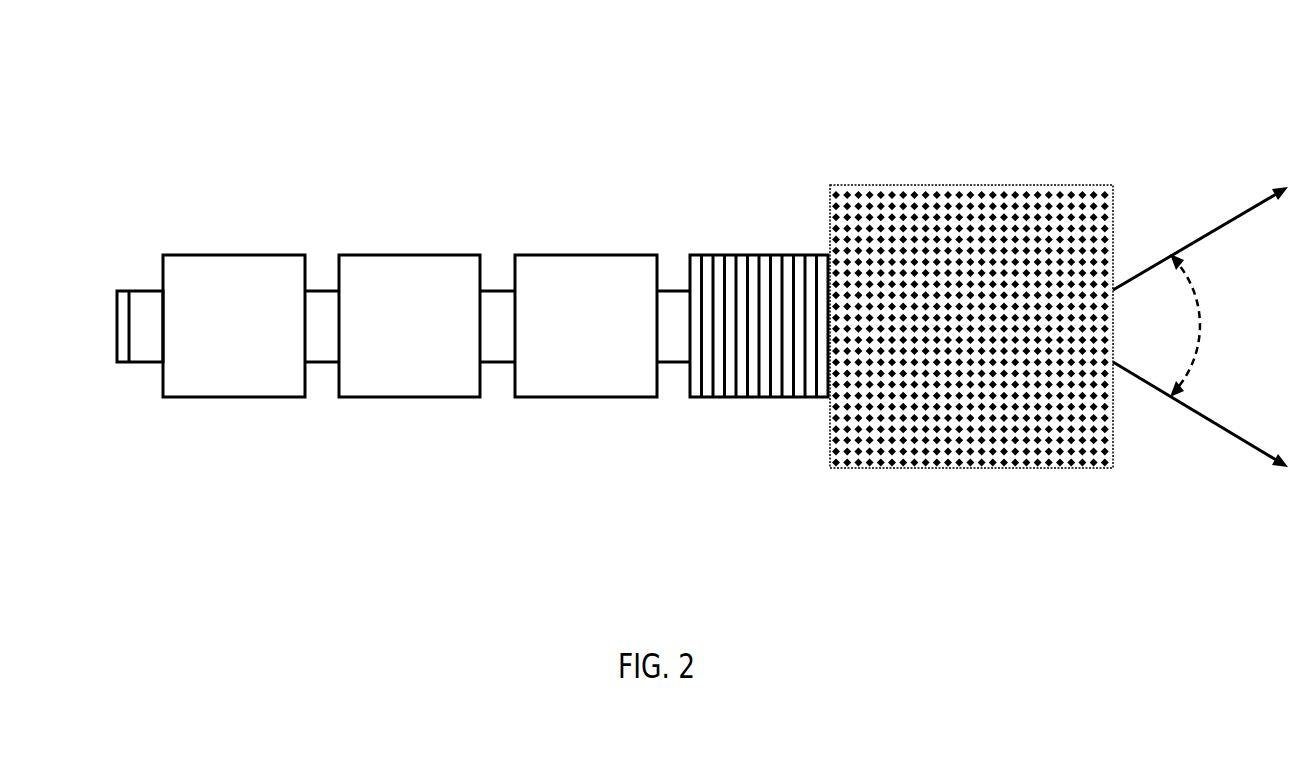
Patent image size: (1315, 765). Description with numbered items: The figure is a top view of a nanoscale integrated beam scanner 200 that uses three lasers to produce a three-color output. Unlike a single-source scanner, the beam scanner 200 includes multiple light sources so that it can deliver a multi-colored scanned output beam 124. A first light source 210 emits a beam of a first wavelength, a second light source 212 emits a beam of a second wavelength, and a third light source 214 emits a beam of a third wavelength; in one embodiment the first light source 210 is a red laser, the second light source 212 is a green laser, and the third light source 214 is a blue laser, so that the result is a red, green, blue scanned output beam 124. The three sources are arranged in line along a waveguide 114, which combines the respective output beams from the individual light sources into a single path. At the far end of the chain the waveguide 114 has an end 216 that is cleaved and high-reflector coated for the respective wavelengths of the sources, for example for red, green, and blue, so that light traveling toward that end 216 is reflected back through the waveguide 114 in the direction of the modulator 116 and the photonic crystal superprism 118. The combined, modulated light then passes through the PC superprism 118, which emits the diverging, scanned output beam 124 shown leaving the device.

The nanoscale integrated beam scanner 200 is at (1203, 68).
The first light source 210 is at (268, 255).
The second light source 212 is at (443, 255).
The third light source 214 is at (620, 255).
The end 216 is at (114, 307).
The waveguide 114 is at (503, 364).
The modulator 116 is at (759, 255).
The PC superprism 118 is at (971, 185).
The scanned output beam 124 is at (1243, 210).